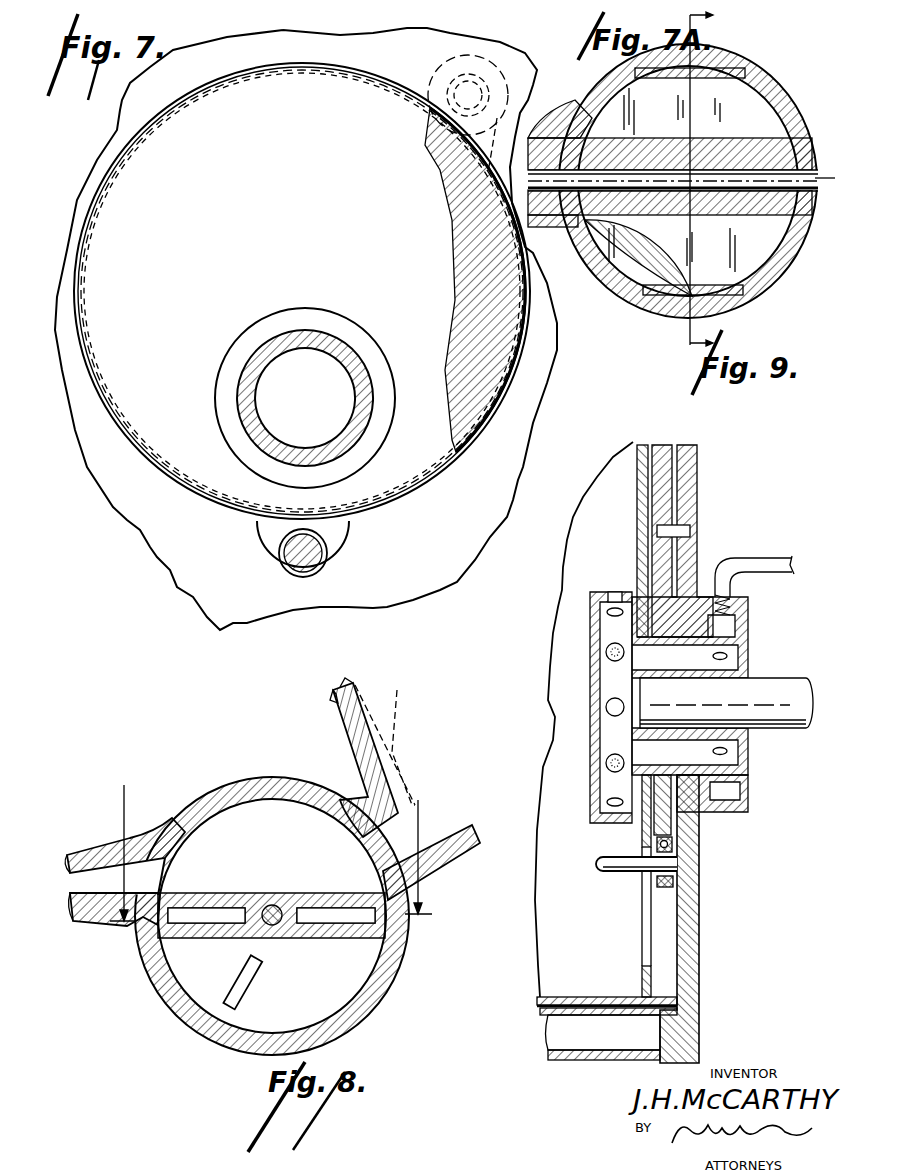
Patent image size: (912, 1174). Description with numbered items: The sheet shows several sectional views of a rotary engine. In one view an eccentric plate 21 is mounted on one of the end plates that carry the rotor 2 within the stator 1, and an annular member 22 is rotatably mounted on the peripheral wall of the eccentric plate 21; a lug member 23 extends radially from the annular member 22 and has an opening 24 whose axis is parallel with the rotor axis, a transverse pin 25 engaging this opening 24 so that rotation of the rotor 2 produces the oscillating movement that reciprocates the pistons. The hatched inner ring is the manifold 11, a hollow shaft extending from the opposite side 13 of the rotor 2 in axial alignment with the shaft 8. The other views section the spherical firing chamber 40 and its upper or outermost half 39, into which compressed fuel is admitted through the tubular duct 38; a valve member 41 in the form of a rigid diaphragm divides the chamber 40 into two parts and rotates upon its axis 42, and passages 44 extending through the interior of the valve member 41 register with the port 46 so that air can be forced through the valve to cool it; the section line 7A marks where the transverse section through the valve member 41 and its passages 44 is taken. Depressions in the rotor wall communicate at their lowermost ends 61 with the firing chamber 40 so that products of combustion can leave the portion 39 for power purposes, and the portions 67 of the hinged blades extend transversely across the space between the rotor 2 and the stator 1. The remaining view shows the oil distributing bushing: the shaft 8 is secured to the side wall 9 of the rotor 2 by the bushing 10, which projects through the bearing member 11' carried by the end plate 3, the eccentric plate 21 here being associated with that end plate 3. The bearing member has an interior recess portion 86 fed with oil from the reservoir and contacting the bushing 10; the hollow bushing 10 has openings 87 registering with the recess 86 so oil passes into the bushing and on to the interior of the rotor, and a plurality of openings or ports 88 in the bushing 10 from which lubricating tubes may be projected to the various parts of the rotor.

In FIG. 9, the stator 1 is at (598, 1053).
In FIG. 9, the rotor 2 is at (598, 999).
In FIG. 9, the end plate 3 is at (680, 515).
In FIG. 7A, the shaft 8 is at (673, 179).
In FIG. 9, the shaft 8 is at (775, 708).
In FIG. 9, the side wall 9 is at (645, 563).
In FIG. 9, the bushing 10 is at (677, 812).
In FIG. 7, the manifold 11 is at (305, 369).
In FIG. 9, the bearing member 11' is at (738, 786).
In FIG. 7, the opposite side of the rotor 13 is at (243, 344).
In FIG. 7, the eccentric plate 21 is at (160, 390).
In FIG. 9, the eccentric plate 21 is at (660, 485).
In FIG. 7, the annular member 22 is at (527, 304).
In FIG. 7, the lug member 23 is at (338, 556).
In FIG. 9, the lug member 23 is at (670, 886).
In FIG. 7, the opening 24 is at (316, 556).
In FIG. 9, the opening 24 is at (673, 881).
In FIG. 7, the transverse pin 25 is at (478, 92).
In FIG. 9, the transverse pin 25 is at (612, 874).
In FIG. 8, the tubular duct 38 is at (113, 922).
In FIG. 8, the upper or outermost half of the firing chamber 39 is at (262, 810).
In FIG. 7A, the spherical firing chamber 40 is at (775, 84).
In FIG. 7A, the valve member 41 is at (618, 275).
In FIG. 8, the valve member 41 is at (210, 893).
In FIG. 7A, the axis 42 is at (560, 186).
In FIG. 8, the axis 42 is at (272, 926).
In FIG. 7A, the passages 44 is at (613, 110).
In FIG. 8, the passages 44 is at (229, 912).
In FIG. 8, the port 46 is at (230, 987).
In FIG. 8, the lowermost ends 61 is at (390, 853).
In FIG. 8, the portions of the blades 67 is at (357, 684).
In FIG. 9, the interior recess portion 86 is at (722, 626).
In FIG. 9, the openings 87 is at (728, 656).
In FIG. 9, the openings or ports 88 is at (613, 592).
In FIG. 8, the section line 7A is at (281, 853).